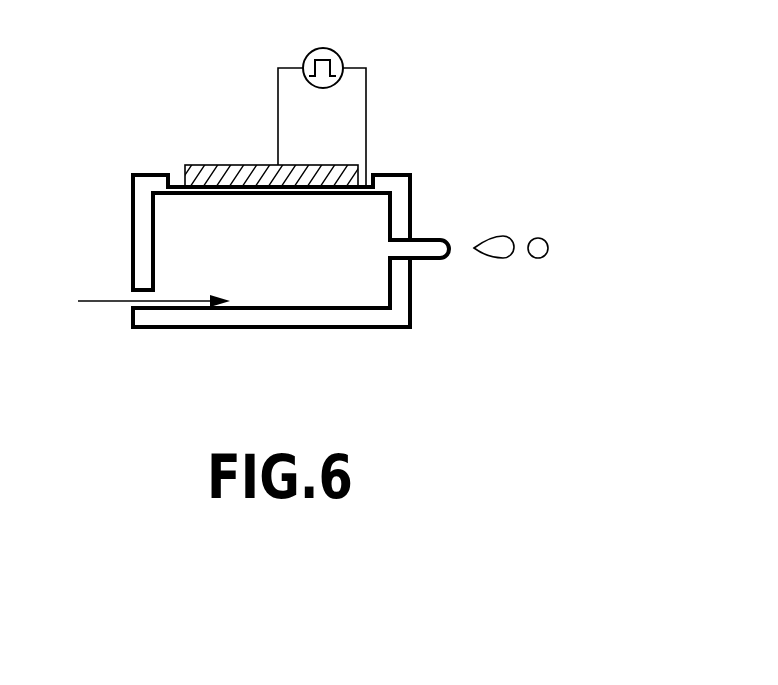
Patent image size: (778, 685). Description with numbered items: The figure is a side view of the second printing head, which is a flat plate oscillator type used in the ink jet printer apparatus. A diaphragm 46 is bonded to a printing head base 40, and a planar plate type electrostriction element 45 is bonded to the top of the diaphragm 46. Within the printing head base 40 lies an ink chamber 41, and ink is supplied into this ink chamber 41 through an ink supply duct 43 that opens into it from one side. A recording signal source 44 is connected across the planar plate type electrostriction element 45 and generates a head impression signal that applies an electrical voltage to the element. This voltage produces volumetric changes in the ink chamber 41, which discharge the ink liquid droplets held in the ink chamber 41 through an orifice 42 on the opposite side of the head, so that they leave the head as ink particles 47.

The printing head base 40 is at (392, 176).
The ink chamber 41 is at (353, 297).
The orifice 42 is at (420, 233).
The ink supply duct 43 is at (140, 297).
The recording signal source 44 is at (345, 56).
The planar plate type electrostriction element 45 is at (223, 165).
The diaphragm 46 is at (199, 168).
The ink particles 47 is at (502, 259).